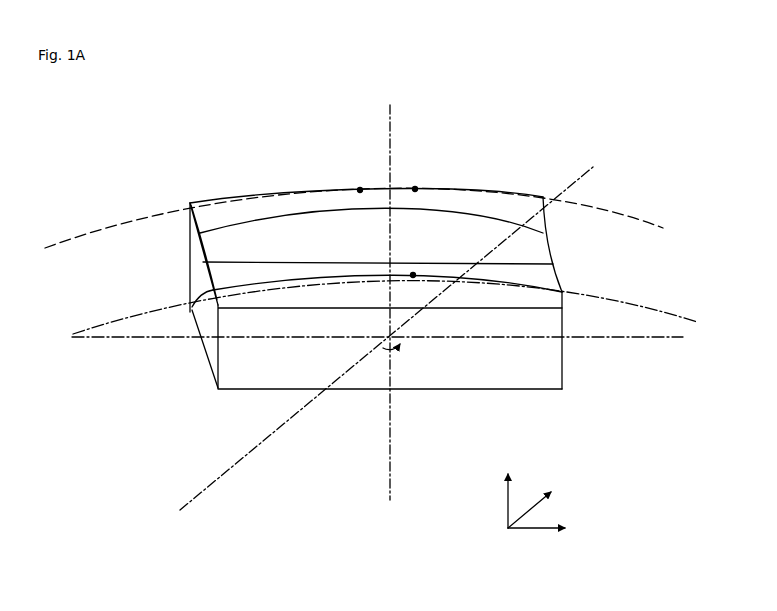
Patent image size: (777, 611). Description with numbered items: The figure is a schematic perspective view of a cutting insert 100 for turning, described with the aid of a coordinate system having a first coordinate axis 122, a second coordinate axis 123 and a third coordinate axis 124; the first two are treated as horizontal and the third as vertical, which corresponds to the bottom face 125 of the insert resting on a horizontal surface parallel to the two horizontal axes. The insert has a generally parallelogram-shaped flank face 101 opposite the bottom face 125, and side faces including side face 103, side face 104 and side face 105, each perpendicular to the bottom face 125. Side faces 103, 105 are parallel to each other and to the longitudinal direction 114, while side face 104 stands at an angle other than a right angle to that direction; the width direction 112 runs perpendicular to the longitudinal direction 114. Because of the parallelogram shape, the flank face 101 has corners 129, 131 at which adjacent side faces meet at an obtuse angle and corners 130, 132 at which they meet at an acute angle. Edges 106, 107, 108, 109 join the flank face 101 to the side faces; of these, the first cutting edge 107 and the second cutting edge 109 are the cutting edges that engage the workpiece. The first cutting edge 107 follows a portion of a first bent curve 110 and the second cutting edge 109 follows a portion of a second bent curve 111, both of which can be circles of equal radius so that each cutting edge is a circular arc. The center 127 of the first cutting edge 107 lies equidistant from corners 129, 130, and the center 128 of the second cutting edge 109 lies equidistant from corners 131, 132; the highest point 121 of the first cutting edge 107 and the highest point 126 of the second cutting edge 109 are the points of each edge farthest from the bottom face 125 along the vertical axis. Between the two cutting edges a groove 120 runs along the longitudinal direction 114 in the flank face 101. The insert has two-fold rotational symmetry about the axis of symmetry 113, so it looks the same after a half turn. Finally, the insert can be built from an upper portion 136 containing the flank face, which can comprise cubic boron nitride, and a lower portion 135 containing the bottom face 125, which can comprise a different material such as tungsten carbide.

The cutting insert 100 is at (171, 116).
The flank face 101 is at (463, 196).
The side face 103 is at (535, 391).
The side face 104 is at (573, 364).
The side face 105 is at (274, 185).
The edge 106 is at (188, 215).
The first cutting edge 107 is at (553, 280).
The edge 108 is at (548, 218).
The second cutting edge 109 is at (320, 189).
The first bent curve 110 is at (675, 302).
The second bent curve 111 is at (645, 210).
The width direction 112 is at (584, 172).
The axis of symmetry 113 is at (391, 121).
The longitudinal direction 114 is at (641, 341).
The groove 120 is at (370, 246).
The highest point of the first cutting edge 121 is at (360, 277).
The first coordinate axis 122 is at (530, 530).
The second coordinate axis 123 is at (530, 500).
The third coordinate axis 124 is at (506, 500).
The bottom face 125 is at (372, 396).
The highest point of the second cutting edge 126 is at (415, 187).
The center of the first cutting edge 127 is at (415, 278).
The center of the second cutting edge 128 is at (360, 188).
The corner 129 is at (189, 348).
The corner 130 is at (565, 300).
The corner 131 is at (540, 205).
The corner 132 is at (190, 202).
The lower portion 135 is at (237, 382).
The upper portion 136 is at (193, 235).